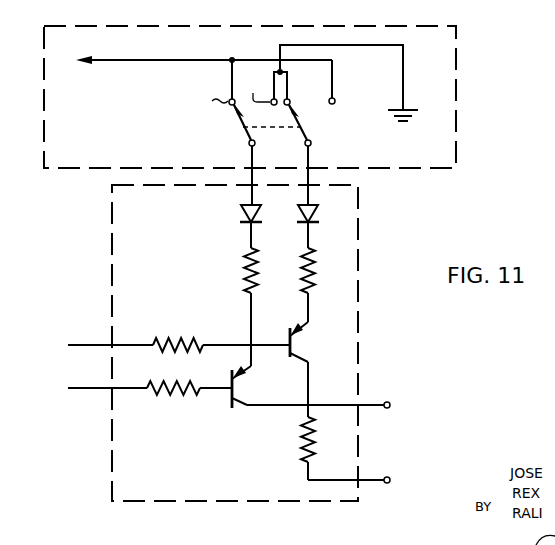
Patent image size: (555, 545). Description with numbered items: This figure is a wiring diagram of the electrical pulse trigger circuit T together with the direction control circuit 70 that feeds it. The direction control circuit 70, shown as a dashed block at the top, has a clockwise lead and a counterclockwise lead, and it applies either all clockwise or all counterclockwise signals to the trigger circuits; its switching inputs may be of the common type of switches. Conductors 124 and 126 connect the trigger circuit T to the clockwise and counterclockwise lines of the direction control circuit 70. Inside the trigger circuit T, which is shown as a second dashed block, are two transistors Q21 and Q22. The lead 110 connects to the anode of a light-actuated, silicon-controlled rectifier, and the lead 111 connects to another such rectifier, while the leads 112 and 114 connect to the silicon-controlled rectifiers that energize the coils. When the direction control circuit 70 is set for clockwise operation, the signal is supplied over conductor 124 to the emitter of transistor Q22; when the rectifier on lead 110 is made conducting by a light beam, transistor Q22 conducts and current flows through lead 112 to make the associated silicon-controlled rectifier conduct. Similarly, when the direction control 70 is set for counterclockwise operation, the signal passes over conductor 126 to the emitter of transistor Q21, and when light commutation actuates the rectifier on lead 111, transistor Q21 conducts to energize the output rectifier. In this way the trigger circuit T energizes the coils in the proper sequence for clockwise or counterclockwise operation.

The direction control circuit 70 is at (458, 81).
The conductor 124 is at (247, 146).
The conductor 126 is at (310, 143).
The trigger circuit T is at (365, 353).
The transistor Q21 is at (296, 345).
The transistor Q22 is at (238, 385).
The lead 111 is at (86, 320).
The lead 110 is at (86, 389).
The lead 112 is at (389, 408).
The lead 114 is at (387, 483).